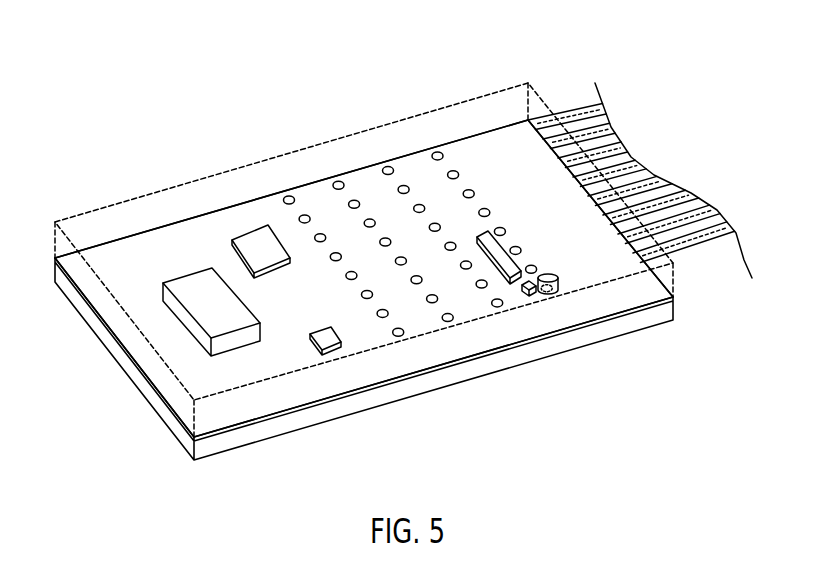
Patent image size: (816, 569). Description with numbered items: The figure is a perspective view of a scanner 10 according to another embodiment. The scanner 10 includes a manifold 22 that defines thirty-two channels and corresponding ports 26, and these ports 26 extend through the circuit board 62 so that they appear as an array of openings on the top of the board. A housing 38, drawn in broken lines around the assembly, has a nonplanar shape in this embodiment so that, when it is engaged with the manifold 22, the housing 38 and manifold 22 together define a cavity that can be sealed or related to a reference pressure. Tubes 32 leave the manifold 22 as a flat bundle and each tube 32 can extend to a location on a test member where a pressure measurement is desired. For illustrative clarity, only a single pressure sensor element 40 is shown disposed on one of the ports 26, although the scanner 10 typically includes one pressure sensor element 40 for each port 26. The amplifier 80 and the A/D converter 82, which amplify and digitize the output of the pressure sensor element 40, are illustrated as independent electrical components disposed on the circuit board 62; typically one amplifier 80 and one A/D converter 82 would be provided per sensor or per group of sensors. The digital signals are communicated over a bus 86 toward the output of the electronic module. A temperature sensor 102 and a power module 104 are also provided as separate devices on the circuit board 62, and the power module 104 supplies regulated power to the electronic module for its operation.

The scanner 10 is at (211, 79).
The manifold 22 is at (542, 350).
The ports 26 is at (441, 151).
The tubes 32 is at (701, 188).
The housing 38 is at (102, 205).
The pressure sensor element 40 is at (556, 282).
The circuit board 62 is at (497, 147).
The amplifier 80 is at (510, 283).
The A/D converter 82 is at (531, 292).
The bus 86 is at (203, 312).
The temperature sensor 102 is at (334, 343).
The power module 104 is at (257, 237).